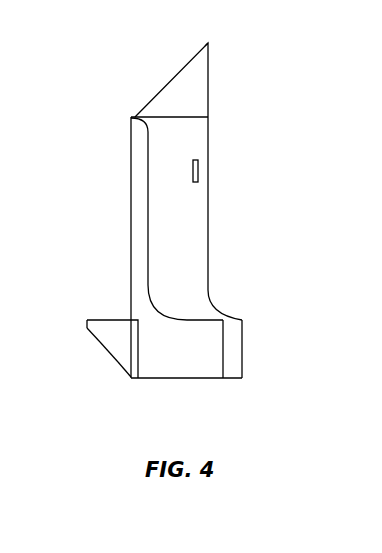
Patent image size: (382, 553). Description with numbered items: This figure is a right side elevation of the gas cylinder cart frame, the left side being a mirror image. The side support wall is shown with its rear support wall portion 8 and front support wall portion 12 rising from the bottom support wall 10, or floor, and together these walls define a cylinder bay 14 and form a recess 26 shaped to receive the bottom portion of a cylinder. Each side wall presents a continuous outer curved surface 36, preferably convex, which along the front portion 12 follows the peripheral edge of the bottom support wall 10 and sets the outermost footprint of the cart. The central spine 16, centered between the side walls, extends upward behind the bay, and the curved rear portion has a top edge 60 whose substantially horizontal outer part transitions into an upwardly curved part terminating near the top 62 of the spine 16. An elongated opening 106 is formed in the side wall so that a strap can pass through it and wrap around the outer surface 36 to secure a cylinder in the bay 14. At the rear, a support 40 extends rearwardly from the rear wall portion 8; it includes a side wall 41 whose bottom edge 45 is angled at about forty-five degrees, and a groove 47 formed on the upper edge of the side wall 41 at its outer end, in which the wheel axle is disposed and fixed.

The rear support wall portion 8 is at (142, 200).
The bottom support wall 10 is at (212, 378).
The front support wall portion 12 is at (242, 330).
The cylinder bay 14 is at (153, 248).
The central spine 16 is at (208, 87).
The recess 26 is at (192, 318).
The outer curved surface 36 is at (215, 342).
The support 40 is at (108, 347).
The side wall of support 41 is at (87, 330).
The bottom edge 45 is at (117, 367).
The groove 47 is at (87, 325).
The top edge 60 is at (137, 116).
The top of spine 62 is at (208, 43).
The opening 106 is at (199, 170).